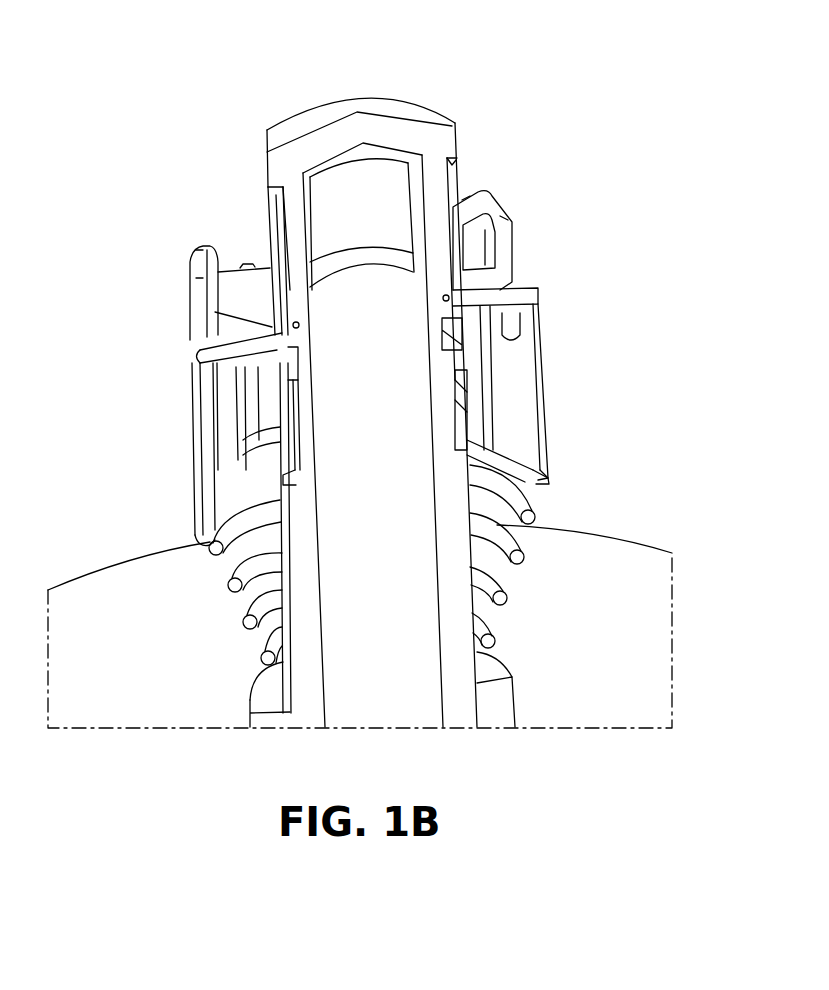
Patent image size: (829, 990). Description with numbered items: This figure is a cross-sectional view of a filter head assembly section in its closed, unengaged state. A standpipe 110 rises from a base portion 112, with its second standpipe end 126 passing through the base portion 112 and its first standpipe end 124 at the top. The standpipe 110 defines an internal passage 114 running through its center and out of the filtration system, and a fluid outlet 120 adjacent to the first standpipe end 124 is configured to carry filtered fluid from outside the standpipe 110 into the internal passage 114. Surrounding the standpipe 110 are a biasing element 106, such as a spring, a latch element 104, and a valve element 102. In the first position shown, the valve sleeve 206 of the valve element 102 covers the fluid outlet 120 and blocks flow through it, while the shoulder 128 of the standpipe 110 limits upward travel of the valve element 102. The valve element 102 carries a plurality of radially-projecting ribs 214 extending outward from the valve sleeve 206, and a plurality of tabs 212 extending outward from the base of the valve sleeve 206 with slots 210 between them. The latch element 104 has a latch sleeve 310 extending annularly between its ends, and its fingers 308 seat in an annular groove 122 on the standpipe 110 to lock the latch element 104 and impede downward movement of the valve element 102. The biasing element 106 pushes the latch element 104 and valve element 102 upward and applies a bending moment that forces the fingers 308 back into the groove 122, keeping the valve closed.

The standpipe 110 is at (432, 97).
The first standpipe end 124 is at (348, 92).
The shoulder 128 is at (460, 162).
The fluid outlet 120 is at (327, 197).
The valve sleeve 206 is at (268, 210).
The plurality of slots 210 is at (200, 342).
The plurality of radially-projecting ribs 214 is at (197, 265).
The plurality of tabs 212 is at (253, 268).
The annular groove 122 is at (285, 368).
The valve element 102 is at (520, 247).
The latch element 104 is at (552, 393).
The plurality of fingers 308 is at (490, 375).
The latch sleeve 310 is at (550, 447).
The biasing element 106 is at (540, 553).
The internal passage 114 is at (413, 609).
The base portion 112 is at (510, 707).
The second standpipe end 126 is at (455, 728).